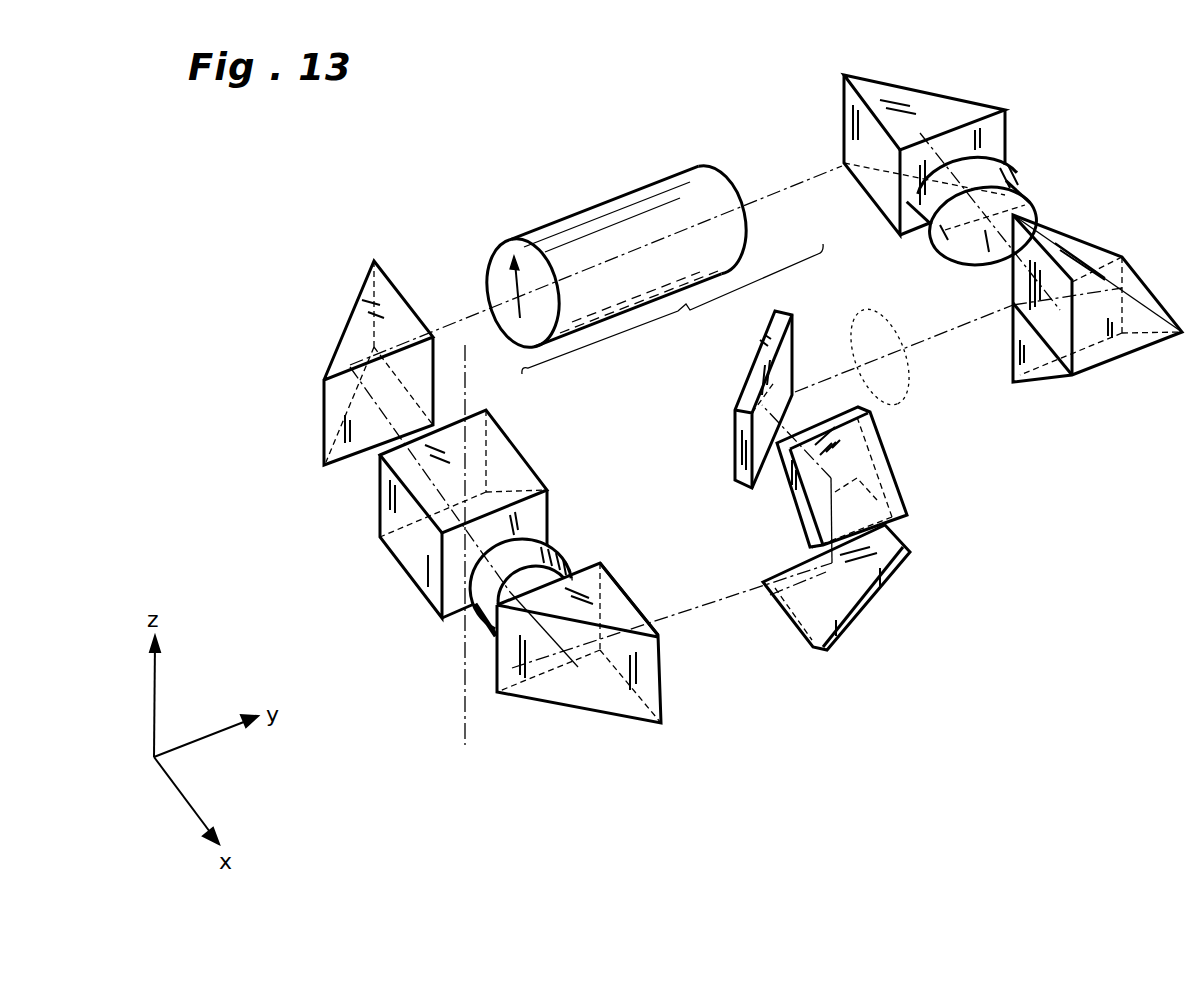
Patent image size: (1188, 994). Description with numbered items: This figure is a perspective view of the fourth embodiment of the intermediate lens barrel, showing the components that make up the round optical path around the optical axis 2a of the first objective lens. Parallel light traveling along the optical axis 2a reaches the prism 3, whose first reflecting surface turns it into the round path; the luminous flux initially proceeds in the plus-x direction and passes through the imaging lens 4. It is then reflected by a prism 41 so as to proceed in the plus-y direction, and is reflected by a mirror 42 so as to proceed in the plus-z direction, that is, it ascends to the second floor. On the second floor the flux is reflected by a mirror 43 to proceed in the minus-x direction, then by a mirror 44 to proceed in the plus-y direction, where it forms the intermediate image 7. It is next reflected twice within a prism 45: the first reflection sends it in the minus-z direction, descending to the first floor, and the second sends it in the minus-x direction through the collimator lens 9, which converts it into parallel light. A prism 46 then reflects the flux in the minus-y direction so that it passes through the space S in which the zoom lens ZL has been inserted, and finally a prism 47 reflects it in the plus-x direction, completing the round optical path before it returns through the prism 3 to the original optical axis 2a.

The optical axis 2a is at (460, 703).
The prism 3 is at (422, 562).
The imaging lens 4 is at (470, 598).
The intermediate image 7 is at (905, 395).
The collimator lens 9 is at (1002, 160).
The prism 41 is at (583, 690).
The mirror 42 is at (810, 600).
The mirror 43 is at (790, 482).
The mirror 44 is at (795, 357).
The prism 45 is at (1132, 290).
The prism 46 is at (928, 108).
The prism 47 is at (357, 330).
The zoom lens ZL is at (583, 210).
The space S is at (672, 309).